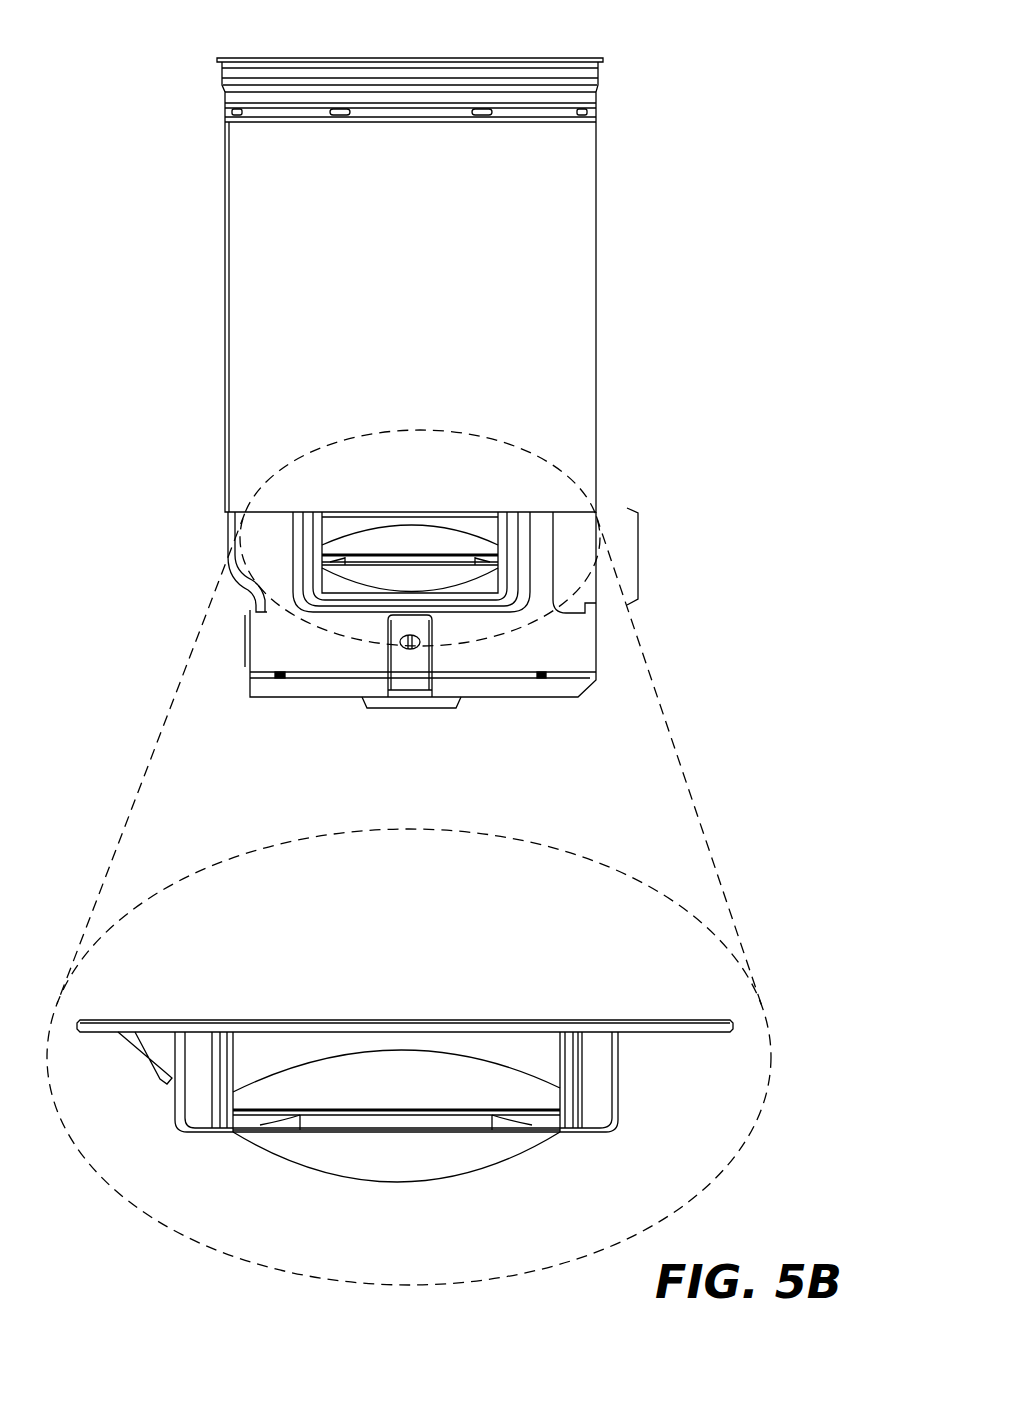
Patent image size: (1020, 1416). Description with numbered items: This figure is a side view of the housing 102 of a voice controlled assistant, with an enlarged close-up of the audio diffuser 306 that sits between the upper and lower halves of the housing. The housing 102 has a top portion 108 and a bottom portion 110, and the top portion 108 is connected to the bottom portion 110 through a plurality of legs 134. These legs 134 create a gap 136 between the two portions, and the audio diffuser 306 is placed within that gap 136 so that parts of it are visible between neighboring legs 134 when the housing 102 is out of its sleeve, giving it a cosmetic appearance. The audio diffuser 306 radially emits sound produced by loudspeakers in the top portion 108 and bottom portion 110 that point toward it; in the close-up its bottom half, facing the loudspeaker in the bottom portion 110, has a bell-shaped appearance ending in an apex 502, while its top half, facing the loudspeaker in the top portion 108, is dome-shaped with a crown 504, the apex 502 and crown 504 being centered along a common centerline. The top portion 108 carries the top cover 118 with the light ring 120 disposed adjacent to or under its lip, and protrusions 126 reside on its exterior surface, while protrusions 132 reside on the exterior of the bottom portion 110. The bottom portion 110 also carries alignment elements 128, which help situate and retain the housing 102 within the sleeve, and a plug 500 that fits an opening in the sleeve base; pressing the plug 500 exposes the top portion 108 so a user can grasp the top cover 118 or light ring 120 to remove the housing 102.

The housing 102 is at (613, 37).
The top portion 108 is at (596, 230).
The bottom portion 110 is at (250, 648).
The top cover 118 is at (243, 57).
The light ring 120 is at (603, 60).
The protrusions 126 is at (337, 118).
The alignment elements 128 is at (440, 660).
The protrusions 132 is at (541, 678).
The plurality of legs 134 is at (553, 553).
The gap 136 is at (638, 555).
The audio diffuser 306 is at (480, 527).
The plug 500 is at (363, 705).
The apex 502 is at (406, 1184).
The crown 504 is at (401, 1045).